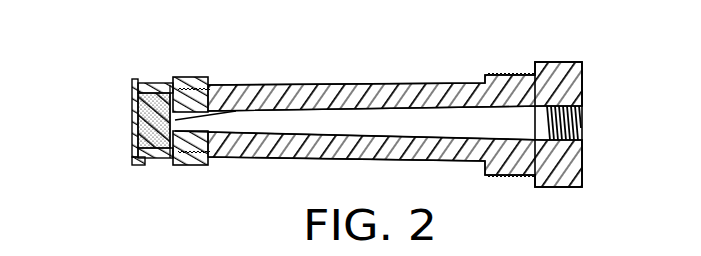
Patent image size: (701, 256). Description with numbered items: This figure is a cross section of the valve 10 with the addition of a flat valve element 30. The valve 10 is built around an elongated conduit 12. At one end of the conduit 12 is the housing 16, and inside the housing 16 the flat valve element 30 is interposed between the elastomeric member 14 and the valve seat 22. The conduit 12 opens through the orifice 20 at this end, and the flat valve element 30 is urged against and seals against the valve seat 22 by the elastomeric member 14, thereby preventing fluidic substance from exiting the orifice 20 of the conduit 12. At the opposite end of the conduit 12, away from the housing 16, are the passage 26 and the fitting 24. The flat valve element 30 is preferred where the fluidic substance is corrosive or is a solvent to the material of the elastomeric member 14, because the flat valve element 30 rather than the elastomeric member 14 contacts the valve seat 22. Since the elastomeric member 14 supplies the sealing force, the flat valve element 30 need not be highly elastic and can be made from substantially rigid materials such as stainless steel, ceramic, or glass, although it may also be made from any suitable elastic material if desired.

The valve 10 is at (351, 29).
The conduit 12 is at (376, 90).
The elastomeric member 14 is at (153, 146).
The housing 16 is at (132, 164).
The orifice 20 is at (226, 113).
The valve seat 22 is at (196, 148).
The fitting 24 is at (560, 67).
The passage 26 is at (590, 140).
The flat valve element 30 is at (163, 101).